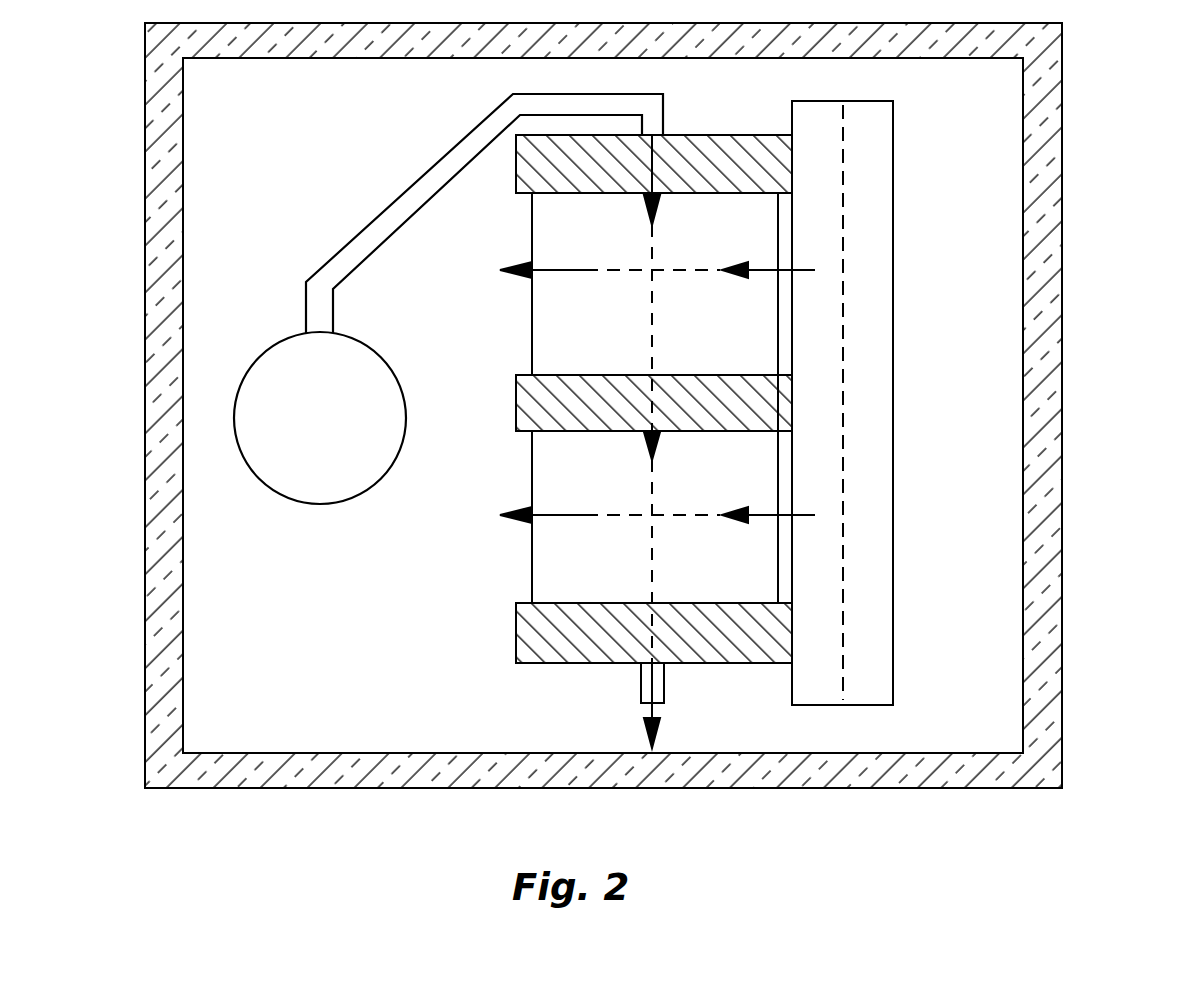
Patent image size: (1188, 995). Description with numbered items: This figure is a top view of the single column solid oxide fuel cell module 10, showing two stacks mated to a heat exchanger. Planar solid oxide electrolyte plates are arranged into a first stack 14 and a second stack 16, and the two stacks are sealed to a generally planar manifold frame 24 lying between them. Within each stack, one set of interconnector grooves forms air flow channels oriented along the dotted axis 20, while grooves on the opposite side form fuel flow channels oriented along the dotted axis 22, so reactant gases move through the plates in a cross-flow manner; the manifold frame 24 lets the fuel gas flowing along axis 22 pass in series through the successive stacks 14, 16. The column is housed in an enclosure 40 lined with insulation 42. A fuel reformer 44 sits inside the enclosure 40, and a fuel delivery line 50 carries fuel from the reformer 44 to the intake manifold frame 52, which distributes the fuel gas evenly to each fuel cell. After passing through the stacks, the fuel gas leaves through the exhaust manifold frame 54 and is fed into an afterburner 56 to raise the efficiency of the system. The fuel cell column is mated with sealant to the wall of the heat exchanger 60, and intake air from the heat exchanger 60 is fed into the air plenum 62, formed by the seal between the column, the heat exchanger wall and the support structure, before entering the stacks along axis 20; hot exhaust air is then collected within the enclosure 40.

The SOFC module 10 is at (1080, 187).
The stack 14 is at (490, 322).
The stack 16 is at (490, 572).
The air flow axis 20 is at (558, 272).
The fuel flow axis 22 is at (652, 290).
The manifold frame 24 is at (516, 397).
The enclosure 40 is at (1062, 352).
The insulation 42 is at (283, 753).
The fuel reformer 44 is at (302, 418).
The fuel delivery line 50 is at (405, 191).
The intake manifold frame 52 is at (737, 135).
The exhaust manifold frame 54 is at (516, 635).
The afterburner 56 is at (640, 673).
The heat exchanger 60 is at (853, 342).
The air plenum 62 is at (780, 245).